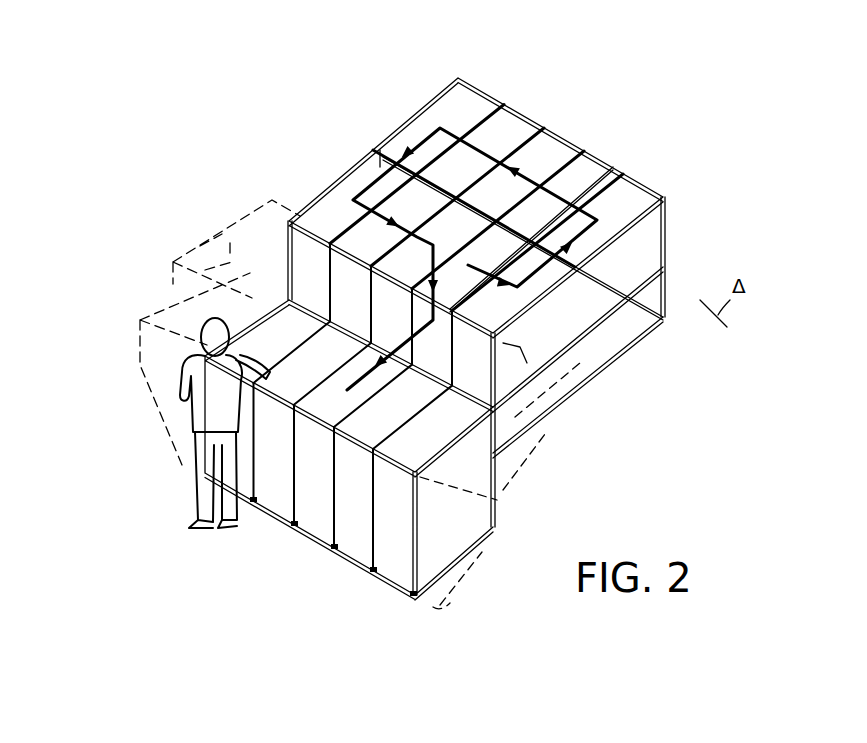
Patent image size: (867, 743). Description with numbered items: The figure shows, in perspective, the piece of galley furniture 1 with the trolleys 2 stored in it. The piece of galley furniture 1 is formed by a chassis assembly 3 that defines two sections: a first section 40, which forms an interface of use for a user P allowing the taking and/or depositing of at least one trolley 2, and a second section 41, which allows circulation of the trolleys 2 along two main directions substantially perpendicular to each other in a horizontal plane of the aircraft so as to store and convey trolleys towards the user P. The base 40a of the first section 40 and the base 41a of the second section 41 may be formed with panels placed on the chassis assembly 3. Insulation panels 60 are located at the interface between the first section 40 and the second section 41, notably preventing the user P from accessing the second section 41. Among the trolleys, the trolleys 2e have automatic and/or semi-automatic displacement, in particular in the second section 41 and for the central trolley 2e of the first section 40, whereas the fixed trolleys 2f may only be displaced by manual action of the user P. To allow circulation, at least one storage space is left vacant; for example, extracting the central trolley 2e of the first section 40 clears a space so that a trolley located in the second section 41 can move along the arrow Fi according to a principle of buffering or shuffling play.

The piece of galley furniture 1 is at (299, 176).
The trolley 2 is at (510, 127).
The trolley with automatic and/or semi-automatic displacement 2e is at (630, 197).
The fixed trolley 2f is at (250, 477).
The chassis assembly 3 is at (612, 163).
The first section 40 is at (480, 550).
The base of the first section 40a is at (470, 565).
The second section 41 is at (417, 112).
The base of the second section 41a is at (632, 347).
The insulation panels 60 is at (173, 262).
The user P is at (200, 395).
The arrow Fi is at (450, 133).